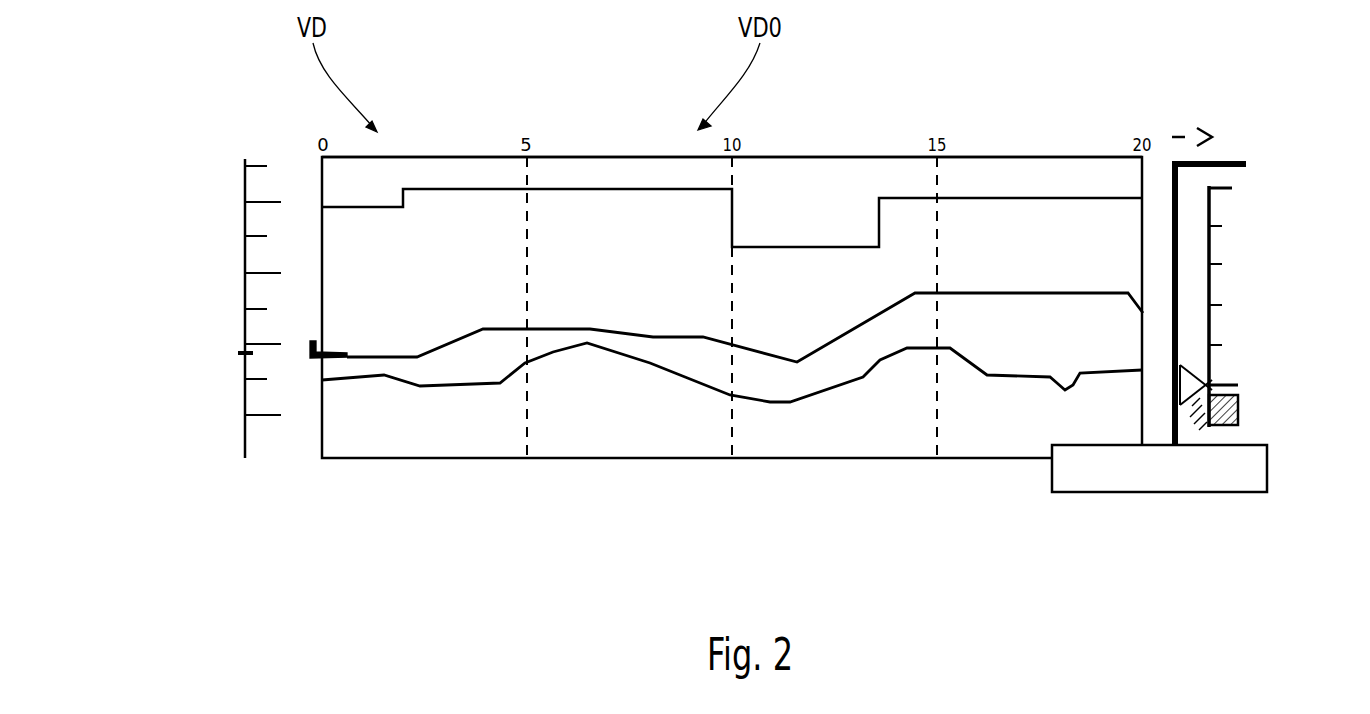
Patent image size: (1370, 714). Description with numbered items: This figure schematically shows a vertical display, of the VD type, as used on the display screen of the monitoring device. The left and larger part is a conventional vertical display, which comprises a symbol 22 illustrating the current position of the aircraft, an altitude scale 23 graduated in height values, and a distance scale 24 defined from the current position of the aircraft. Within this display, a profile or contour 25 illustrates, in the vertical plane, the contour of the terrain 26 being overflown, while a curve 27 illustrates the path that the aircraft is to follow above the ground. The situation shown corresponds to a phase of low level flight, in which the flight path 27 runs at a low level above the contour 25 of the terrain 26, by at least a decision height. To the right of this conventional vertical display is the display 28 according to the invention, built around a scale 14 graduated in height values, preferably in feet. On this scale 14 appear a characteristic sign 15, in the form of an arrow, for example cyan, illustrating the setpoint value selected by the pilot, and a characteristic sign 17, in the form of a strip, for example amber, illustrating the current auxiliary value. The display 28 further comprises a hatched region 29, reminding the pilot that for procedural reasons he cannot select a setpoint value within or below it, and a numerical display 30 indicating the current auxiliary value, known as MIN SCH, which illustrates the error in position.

The scale 14 is at (1236, 216).
The characteristic sign 15 is at (1193, 377).
The characteristic sign 17 is at (1240, 413).
The symbol 22 is at (334, 350).
The altitude scale 23 is at (170, 255).
The distance scale 24 is at (553, 125).
The profile or contour 25 is at (647, 362).
The terrain 26 is at (588, 415).
The curve 27 is at (548, 327).
The display 28 is at (1232, 132).
The hatched region 29 is at (1214, 433).
The numerical display 30 is at (1162, 492).